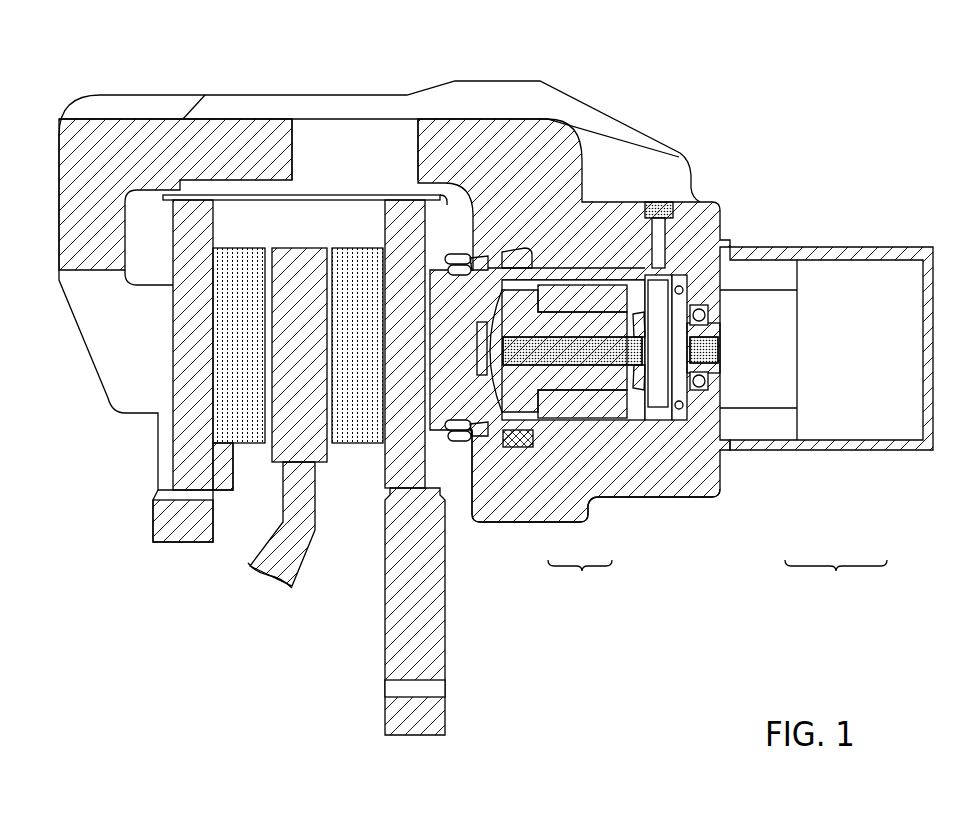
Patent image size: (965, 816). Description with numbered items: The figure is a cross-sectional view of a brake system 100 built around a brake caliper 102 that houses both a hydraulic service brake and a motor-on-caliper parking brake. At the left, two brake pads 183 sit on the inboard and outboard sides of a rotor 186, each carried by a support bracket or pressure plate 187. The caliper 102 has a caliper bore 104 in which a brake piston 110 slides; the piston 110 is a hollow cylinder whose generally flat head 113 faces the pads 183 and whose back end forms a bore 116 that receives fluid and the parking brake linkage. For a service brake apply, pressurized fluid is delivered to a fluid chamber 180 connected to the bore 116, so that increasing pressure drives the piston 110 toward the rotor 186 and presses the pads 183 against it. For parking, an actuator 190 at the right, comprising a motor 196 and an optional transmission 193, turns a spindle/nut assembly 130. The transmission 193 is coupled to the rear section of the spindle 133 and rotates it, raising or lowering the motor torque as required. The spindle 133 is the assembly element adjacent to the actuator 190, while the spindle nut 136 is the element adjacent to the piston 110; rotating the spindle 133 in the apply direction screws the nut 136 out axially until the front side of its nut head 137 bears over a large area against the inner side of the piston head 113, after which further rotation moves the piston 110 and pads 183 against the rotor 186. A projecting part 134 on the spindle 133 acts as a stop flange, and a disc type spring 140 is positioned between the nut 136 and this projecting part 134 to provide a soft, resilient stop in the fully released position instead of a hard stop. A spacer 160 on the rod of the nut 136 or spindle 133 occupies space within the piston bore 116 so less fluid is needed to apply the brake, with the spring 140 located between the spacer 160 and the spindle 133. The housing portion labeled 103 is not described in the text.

The brake system 100 is at (706, 112).
The brake caliper 102 is at (527, 106).
The housing lower portion 103 is at (658, 498).
The caliper bore 104 is at (685, 470).
The brake piston 110 is at (575, 255).
The head 113 is at (458, 445).
The bore 116 is at (615, 285).
The spindle/nut assembly 130 is at (580, 578).
The spindle 133 is at (608, 355).
The projecting part 134 is at (657, 420).
The spindle nut 136 is at (555, 375).
The nut head 137 is at (498, 265).
The disc type spring 140 is at (675, 285).
The spacer 160 is at (588, 300).
The fluid chamber 180 is at (703, 270).
The brake pad 183 is at (235, 428).
The rotor 186 is at (292, 555).
The pressure plate 187 is at (193, 462).
The actuator 190 is at (836, 580).
The transmission 193 is at (770, 452).
The motor 196 is at (882, 455).